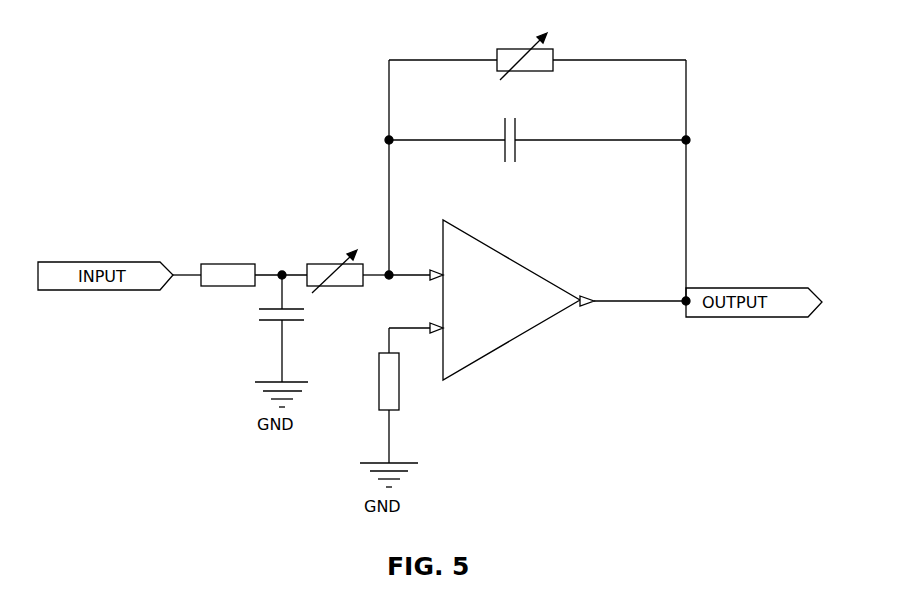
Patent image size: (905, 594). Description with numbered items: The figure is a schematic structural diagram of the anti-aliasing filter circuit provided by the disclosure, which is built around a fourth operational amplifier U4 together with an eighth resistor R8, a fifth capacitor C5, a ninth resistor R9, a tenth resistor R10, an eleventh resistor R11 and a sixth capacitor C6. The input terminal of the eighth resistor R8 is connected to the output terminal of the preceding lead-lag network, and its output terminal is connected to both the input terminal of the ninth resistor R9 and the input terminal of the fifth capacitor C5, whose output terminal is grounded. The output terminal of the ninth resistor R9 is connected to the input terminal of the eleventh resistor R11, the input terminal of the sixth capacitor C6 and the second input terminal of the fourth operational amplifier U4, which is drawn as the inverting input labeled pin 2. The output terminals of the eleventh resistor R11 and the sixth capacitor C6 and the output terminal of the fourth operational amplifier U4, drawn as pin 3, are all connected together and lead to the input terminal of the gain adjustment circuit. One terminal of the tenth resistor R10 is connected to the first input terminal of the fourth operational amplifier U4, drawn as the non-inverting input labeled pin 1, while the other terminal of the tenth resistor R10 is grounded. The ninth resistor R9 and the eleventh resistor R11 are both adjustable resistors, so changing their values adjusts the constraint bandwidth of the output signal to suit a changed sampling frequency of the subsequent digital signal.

The eighth resistor R8 is at (221, 263).
The ninth resistor R9 is at (335, 261).
The tenth resistor R10 is at (406, 408).
The eleventh resistor R11 is at (525, 45).
The fifth capacitor C5 is at (295, 328).
The sixth capacitor C6 is at (537, 125).
The fourth operational amplifier U4 is at (511, 288).
The non-inverting input pin 1 is at (416, 330).
The inverting input pin 2 is at (416, 267).
The output pin 3 is at (633, 293).